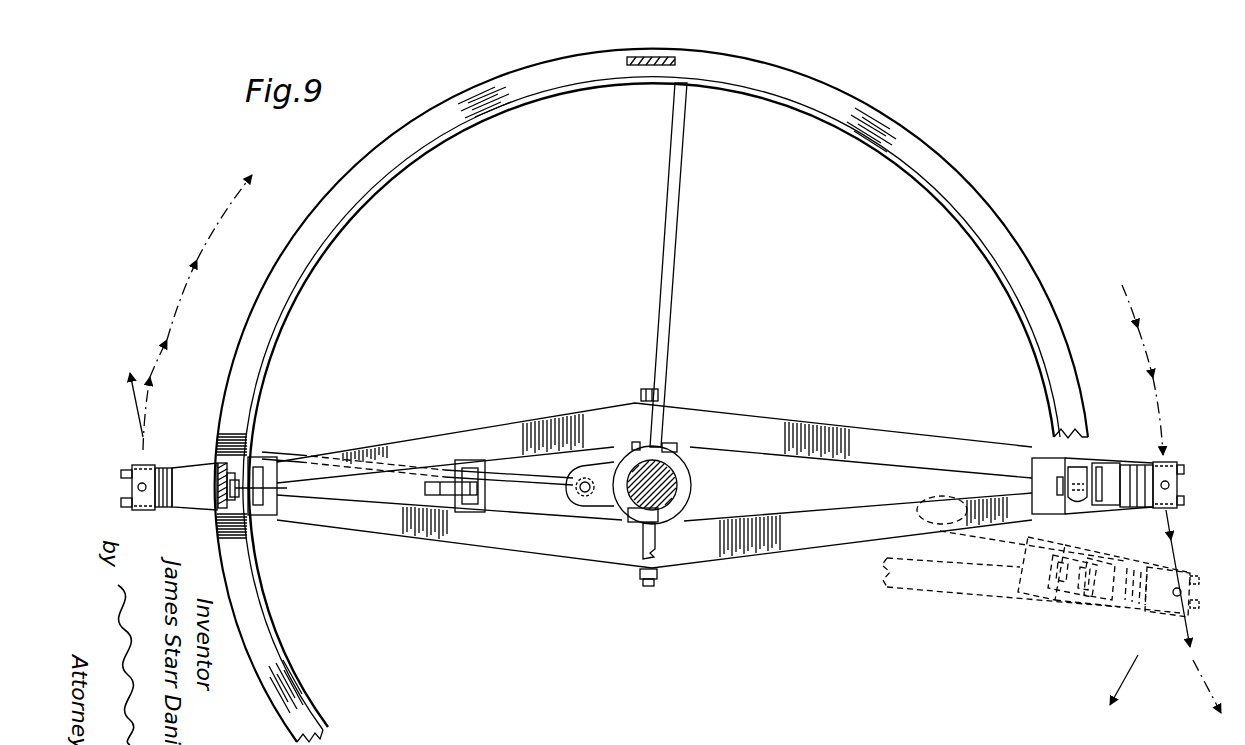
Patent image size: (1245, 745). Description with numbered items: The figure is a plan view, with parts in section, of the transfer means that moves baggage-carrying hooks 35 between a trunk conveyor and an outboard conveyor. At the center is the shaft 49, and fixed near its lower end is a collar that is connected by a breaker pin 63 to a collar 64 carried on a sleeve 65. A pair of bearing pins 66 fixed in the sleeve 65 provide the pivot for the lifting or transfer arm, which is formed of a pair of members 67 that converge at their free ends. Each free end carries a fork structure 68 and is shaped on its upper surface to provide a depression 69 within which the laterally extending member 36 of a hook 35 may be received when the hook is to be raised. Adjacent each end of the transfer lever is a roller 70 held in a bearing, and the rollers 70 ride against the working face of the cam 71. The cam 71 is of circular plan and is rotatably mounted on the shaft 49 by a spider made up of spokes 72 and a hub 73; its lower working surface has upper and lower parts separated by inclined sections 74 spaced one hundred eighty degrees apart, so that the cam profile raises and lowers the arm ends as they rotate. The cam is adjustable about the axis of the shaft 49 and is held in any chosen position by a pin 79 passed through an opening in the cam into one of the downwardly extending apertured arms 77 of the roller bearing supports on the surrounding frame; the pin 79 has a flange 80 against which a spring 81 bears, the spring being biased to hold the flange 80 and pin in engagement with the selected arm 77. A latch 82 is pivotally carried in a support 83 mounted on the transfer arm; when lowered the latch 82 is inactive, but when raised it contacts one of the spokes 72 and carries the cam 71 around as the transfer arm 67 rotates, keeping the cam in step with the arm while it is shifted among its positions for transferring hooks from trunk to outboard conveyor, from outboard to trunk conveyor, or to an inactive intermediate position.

The cam 71 is at (902, 135).
The spokes 72 is at (686, 262).
The bearing pins 66 is at (648, 390).
The members of the transfer arm 67 is at (500, 420).
The shaft 49 is at (668, 478).
The sleeve 65 is at (700, 492).
The collar 64 is at (573, 487).
The breaker pin 63 is at (586, 496).
The hub 73 is at (631, 520).
The flange 80 is at (252, 462).
The inclined sections 74 is at (215, 440).
The pin 79 is at (218, 476).
The apertured arm 77 is at (222, 500).
The spring 81 is at (236, 505).
The latch 82 is at (425, 487).
The support 83 is at (477, 512).
The depression 69 is at (168, 468).
The fork structure 68 is at (124, 482).
The baggage-carrying hooks 35 is at (134, 487).
The laterally extending member 36 is at (128, 502).
The roller 70 is at (1080, 468).